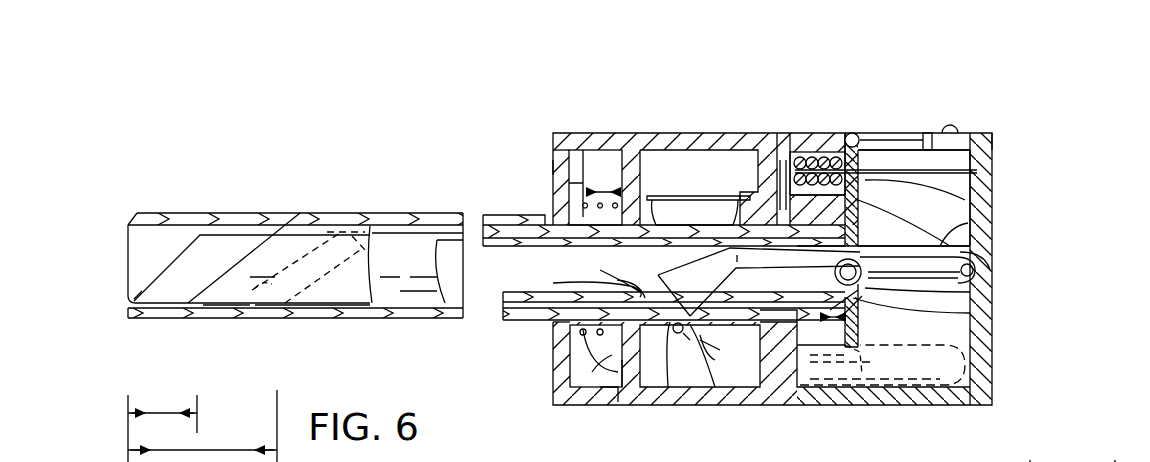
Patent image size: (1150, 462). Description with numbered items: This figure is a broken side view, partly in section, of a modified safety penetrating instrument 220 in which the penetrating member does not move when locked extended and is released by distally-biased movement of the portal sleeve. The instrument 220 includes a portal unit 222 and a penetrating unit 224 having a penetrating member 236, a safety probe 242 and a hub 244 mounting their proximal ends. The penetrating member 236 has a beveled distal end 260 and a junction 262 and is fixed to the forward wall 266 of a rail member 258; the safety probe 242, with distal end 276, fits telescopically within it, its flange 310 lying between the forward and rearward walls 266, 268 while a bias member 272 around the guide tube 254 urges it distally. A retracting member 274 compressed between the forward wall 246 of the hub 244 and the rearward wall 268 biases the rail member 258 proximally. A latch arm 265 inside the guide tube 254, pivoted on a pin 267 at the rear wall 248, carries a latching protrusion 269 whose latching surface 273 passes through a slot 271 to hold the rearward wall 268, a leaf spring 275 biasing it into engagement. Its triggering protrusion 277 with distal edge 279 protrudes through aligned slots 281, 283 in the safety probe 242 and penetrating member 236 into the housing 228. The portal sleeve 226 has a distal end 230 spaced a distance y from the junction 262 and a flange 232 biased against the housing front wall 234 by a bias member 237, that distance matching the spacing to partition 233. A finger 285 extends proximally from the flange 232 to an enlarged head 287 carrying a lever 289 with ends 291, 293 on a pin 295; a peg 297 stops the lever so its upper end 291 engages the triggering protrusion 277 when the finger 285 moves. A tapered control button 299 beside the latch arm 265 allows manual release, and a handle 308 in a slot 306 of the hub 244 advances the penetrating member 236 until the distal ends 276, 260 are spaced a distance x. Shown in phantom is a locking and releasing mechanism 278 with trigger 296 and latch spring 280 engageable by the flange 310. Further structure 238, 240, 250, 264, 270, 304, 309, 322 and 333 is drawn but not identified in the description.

The safety penetrating instrument 220 is at (520, 204).
The portal unit 222 is at (652, 129).
The penetrating unit 224 is at (1016, 112).
The portal sleeve 226 is at (378, 211).
The housing 228 is at (560, 131).
The portal sleeve distal end 230 is at (131, 320).
The portal sleeve flange 232 is at (583, 217).
The partition 233 is at (600, 388).
The housing front wall 234 is at (553, 165).
The penetrating member 236 is at (291, 320).
The bias member 237 is at (585, 345).
The port 238 is at (762, 342).
The chamber 240 is at (697, 194).
The safety probe 242 is at (179, 238).
The hub 244 is at (1000, 128).
The hub forward wall 246 is at (803, 158).
The hub rear wall 248 is at (975, 192).
The chamber wall 250 is at (965, 160).
The guide tube 254 is at (976, 236).
The rail member 258 is at (775, 222).
The beveled distal end 260 is at (341, 232).
The penetrating member junction 262 is at (266, 270).
The plate offset 264 is at (188, 320).
The latch arm 265 is at (1012, 244).
The rail member forward wall 266 is at (806, 158).
The pin 267 is at (942, 260).
The rail member rearward wall 268 is at (980, 202).
The latching protrusion 269 is at (960, 285).
The stem 270 is at (851, 128).
The slot 271 is at (965, 293).
The bias member 272 is at (745, 197).
The latching surface 273 is at (990, 308).
The retracting member 274 is at (839, 150).
The leaf spring 275 is at (990, 170).
The safety probe distal end 276 is at (150, 278).
The triggering protrusion 277 is at (664, 274).
The locking and releasing mechanism 278 is at (848, 388).
The distal edge 279 is at (620, 387).
The latch spring 280 is at (932, 360).
The slot 281 is at (617, 280).
The slot 283 is at (637, 295).
The finger 285 is at (592, 372).
The enlarged head 287 is at (681, 342).
The lever 289 is at (705, 345).
The lever upper end 291 is at (691, 312).
The lever lower end 293 is at (702, 342).
The pin 295 is at (681, 318).
The trigger 296 is at (866, 388).
The peg 297 is at (686, 342).
The control button 299 is at (672, 214).
The rod 304 is at (862, 143).
The slot 306 is at (931, 135).
The handle 308 is at (861, 138).
The cap screw 309 is at (946, 131).
The safety probe flange 310 is at (975, 240).
The conduit 322 is at (1120, 445).
The fitting 333 is at (1035, 445).